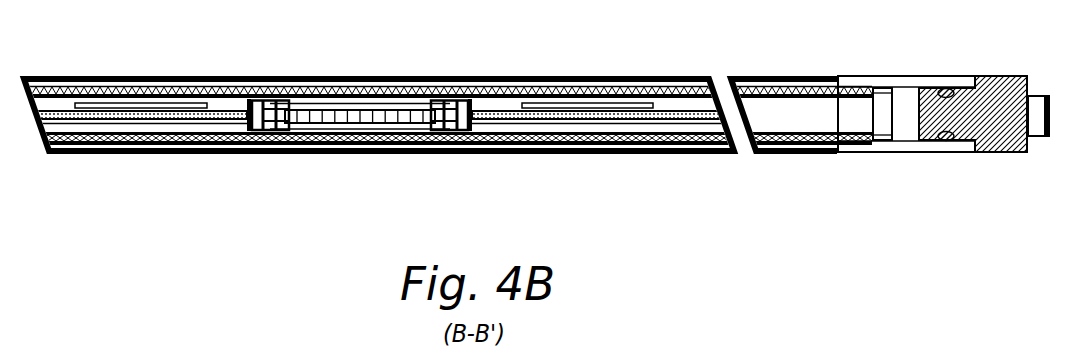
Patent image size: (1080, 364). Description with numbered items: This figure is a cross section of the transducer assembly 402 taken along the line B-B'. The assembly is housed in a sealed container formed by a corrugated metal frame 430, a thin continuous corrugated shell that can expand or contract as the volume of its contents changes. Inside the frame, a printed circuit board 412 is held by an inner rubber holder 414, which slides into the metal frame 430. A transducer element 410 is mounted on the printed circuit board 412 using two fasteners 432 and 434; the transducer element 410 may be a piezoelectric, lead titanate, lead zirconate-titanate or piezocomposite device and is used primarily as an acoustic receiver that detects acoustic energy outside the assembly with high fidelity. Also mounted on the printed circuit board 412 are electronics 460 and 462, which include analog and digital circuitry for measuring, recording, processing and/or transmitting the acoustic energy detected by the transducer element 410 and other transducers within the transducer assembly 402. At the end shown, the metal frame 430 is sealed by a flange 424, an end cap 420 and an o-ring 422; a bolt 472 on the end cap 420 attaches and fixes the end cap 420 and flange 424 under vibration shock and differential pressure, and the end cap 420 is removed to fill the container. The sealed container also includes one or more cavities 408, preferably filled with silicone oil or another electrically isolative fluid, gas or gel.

The transducer assembly 402 is at (524, 185).
The cavities 408 is at (145, 127).
The transducer element 410 is at (337, 117).
The printed circuit board 412 is at (230, 118).
The inner rubber holder 414 is at (672, 88).
The end cap 420 is at (983, 135).
The o-ring 422 is at (945, 133).
The flange 424 is at (900, 150).
The corrugated metal frame 430 is at (470, 78).
The fastener 432 is at (263, 128).
The fastener 434 is at (460, 128).
The electronics 460 is at (153, 102).
The electronics 462 is at (575, 103).
The bolt 472 is at (1040, 102).